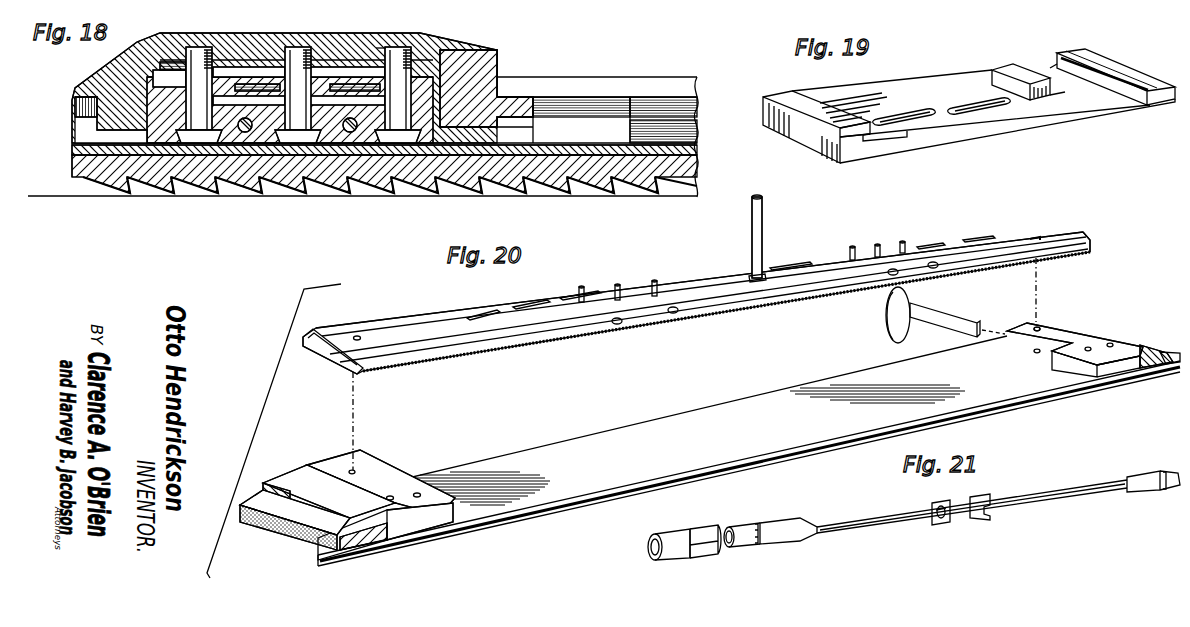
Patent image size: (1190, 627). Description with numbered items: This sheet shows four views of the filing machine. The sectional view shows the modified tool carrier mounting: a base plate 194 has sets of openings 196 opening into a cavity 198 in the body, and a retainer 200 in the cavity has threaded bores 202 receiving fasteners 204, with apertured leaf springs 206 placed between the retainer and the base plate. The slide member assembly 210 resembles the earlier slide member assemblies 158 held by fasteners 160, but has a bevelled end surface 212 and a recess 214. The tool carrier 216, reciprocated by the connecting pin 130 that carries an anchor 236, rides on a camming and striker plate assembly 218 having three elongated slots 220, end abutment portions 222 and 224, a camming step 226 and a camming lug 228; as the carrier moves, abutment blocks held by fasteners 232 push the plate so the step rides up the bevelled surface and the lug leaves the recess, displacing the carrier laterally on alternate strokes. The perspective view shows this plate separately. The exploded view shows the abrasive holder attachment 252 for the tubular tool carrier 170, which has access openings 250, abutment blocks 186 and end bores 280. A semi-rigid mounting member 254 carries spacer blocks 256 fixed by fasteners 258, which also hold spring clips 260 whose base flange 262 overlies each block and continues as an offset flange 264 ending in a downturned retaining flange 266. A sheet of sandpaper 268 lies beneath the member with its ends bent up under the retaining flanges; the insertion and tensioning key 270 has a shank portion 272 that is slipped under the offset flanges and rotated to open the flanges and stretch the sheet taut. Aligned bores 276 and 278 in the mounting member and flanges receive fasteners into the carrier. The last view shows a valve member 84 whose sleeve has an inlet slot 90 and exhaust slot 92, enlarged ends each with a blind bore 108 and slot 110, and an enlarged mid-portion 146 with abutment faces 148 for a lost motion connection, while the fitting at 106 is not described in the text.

In FIG. 21, the valve member 84 is at (1035, 495).
In FIG. 21, the inlet slot 90 is at (673, 533).
In FIG. 21, the exhaust slot 92 is at (702, 532).
In FIG. 21, the fitting 106 is at (777, 527).
In FIG. 21, the blind bore 108 is at (730, 530).
In FIG. 21, the slot 110 is at (757, 538).
In FIG. 18, the connecting pin 130 is at (552, 11).
In FIG. 20, the connecting pin 130 is at (763, 237).
In FIG. 21, the diametrically enlarged mid-portion 146 is at (980, 510).
In FIG. 21, the abutment faces 148 is at (945, 521).
In FIG. 20, the slide member assemblies 158 is at (604, 294).
In FIG. 20, the fasteners 160 is at (620, 287).
In FIG. 20, the tool carrier 170 is at (462, 364).
In FIG. 20, the abutment blocks 186 is at (428, 322).
In FIG. 18, the base plate 194 is at (66, 81).
In FIG. 18, the openings 196 is at (163, 58).
In FIG. 18, the cavity 198 is at (380, 48).
In FIG. 18, the retainer 200 is at (350, 52).
In FIG. 18, the threaded bores 202 is at (216, 60).
In FIG. 18, the fasteners 204 is at (193, 140).
In FIG. 18, the leaf springs 206 is at (163, 72).
In FIG. 18, the slide member assembly 210 is at (137, 133).
In FIG. 18, the bevelled end surface 212 is at (430, 100).
In FIG. 18, the recess 214 is at (228, 120).
In FIG. 18, the tool carrier 216 is at (70, 159).
In FIG. 19, the camming and striker plate assembly 218 is at (983, 110).
In FIG. 18, the elongated slots 220 is at (367, 110).
In FIG. 19, the elongated slots 220 is at (972, 113).
In FIG. 18, the end abutment portion 222 is at (105, 118).
In FIG. 19, the end abutment portion 222 is at (1082, 55).
In FIG. 18, the end abutment portion 224 is at (533, 124).
In FIG. 19, the end abutment portion 224 is at (782, 100).
In FIG. 19, the camming step 226 is at (887, 141).
In FIG. 19, the camming lug 228 is at (1098, 100).
In FIG. 19, the fasteners 232 is at (1021, 50).
In FIG. 18, the anchor 236 is at (592, 11).
In FIG. 20, the access openings 250 is at (677, 312).
In FIG. 20, the abrasive holder attachment 252 is at (679, 416).
In FIG. 20, the mounting member 254 is at (540, 452).
In FIG. 20, the spacer blocks 256 is at (1117, 368).
In FIG. 20, the fasteners 258 is at (1090, 347).
In FIG. 20, the spring clips 260 is at (1073, 323).
In FIG. 20, the base flange 262 is at (363, 480).
In FIG. 20, the offset flange 264 is at (1113, 342).
In FIG. 20, the retaining flange 266 is at (1152, 343).
In FIG. 20, the sheet of sandpaper 268 is at (318, 564).
In FIG. 20, the insertion and tensioning key 270 is at (881, 332).
In FIG. 20, the shank portion 272 is at (943, 307).
In FIG. 20, the bores 276 is at (1033, 354).
In FIG. 20, the bores 278 is at (1037, 323).
In FIG. 20, the bores 280 is at (357, 336).